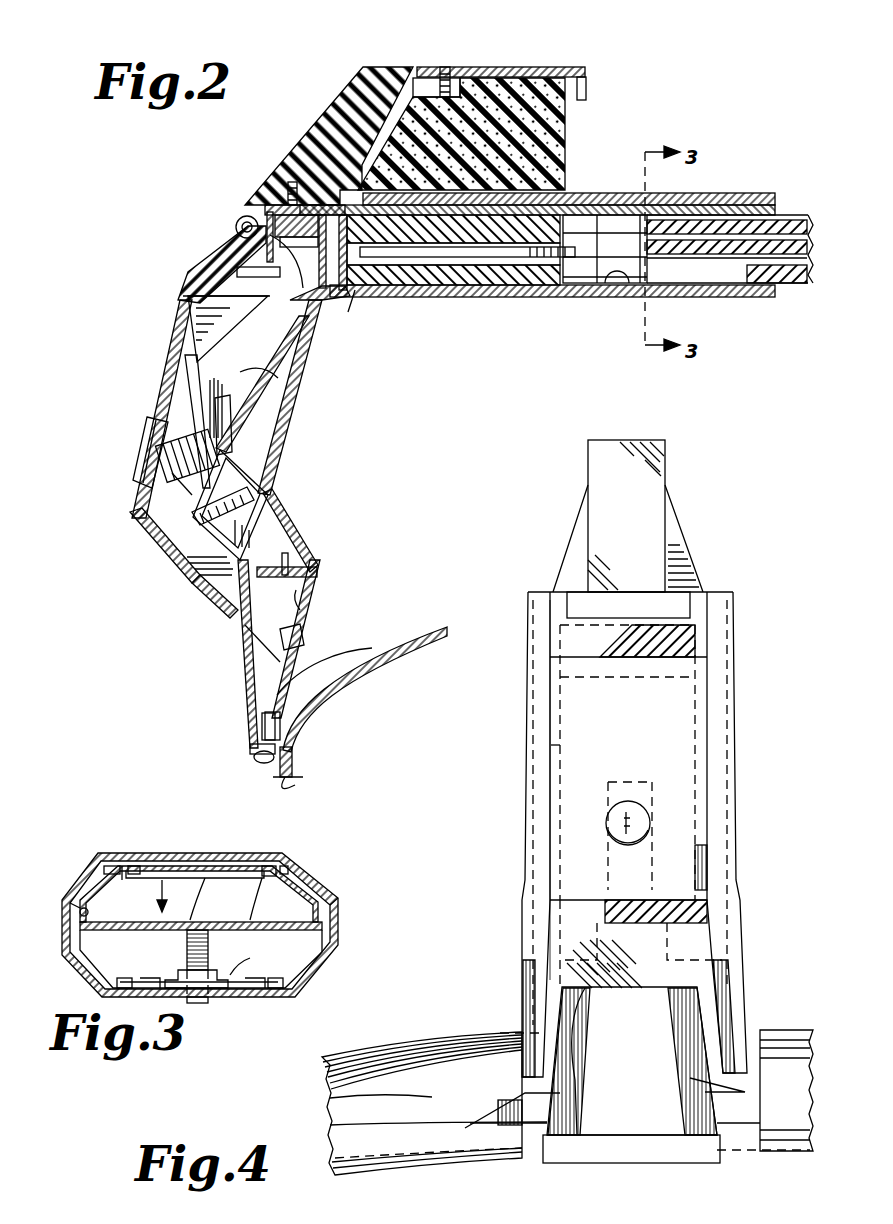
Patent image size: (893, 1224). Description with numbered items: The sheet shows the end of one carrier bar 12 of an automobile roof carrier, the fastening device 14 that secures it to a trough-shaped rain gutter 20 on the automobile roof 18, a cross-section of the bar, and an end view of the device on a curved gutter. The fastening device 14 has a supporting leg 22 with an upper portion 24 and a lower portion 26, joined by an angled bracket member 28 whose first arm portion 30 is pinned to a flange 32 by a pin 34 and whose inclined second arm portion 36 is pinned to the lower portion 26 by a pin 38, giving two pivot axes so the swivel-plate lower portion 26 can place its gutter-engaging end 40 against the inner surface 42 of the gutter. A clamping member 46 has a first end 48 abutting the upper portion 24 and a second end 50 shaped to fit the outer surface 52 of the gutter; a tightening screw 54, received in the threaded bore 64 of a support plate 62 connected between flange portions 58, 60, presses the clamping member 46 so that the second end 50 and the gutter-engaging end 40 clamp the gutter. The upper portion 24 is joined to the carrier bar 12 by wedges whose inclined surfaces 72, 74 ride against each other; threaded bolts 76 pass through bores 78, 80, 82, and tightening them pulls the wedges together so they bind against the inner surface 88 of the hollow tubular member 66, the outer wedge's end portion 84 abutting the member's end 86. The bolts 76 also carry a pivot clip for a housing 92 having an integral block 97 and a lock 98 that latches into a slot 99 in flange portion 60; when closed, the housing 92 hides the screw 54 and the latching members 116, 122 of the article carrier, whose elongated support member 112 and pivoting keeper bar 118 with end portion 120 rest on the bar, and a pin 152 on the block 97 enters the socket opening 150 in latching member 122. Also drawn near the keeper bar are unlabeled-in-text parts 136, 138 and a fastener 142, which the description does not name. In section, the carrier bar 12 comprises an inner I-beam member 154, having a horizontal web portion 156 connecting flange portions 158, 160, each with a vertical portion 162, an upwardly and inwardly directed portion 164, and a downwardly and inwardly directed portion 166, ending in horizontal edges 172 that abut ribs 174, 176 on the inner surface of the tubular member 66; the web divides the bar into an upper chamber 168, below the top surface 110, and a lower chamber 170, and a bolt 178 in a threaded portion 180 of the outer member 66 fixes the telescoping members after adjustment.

In FIG. 3, the carrier bar 12 is at (342, 864).
In FIG. 2, the fastening device 14 is at (118, 446).
In FIG. 4, the fastening device 14 is at (752, 700).
In FIG. 4, the automobile roof 18 is at (440, 1055).
In FIG. 2, the rain gutter 20 is at (245, 760).
In FIG. 4, the rain gutter 20 is at (418, 1142).
In FIG. 2, the supporting leg 22 is at (330, 505).
In FIG. 2, the upper portion 24 is at (292, 472).
In FIG. 2, the lower portion 26 is at (360, 652).
In FIG. 4, the lower portion 26 is at (765, 1100).
In FIG. 2, the angled bracket member 28 is at (322, 585).
In FIG. 2, the first arm portion 30 is at (240, 620).
In FIG. 2, the flange 32 is at (300, 540).
In FIG. 2, the pin 34 is at (312, 575).
In FIG. 2, the second arm portion 36 is at (309, 614).
In FIG. 2, the pin 38 is at (303, 640).
In FIG. 2, the rain gutter-engaging end 40 is at (296, 784).
In FIG. 2, the inner surface 42 is at (292, 730).
In FIG. 2, the clamping member 46 is at (176, 388).
In FIG. 4, the clamping member 46 is at (655, 1008).
In FIG. 2, the first end 48 is at (262, 312).
In FIG. 2, the second end 50 is at (250, 748).
In FIG. 4, the second end 50 is at (630, 1150).
In FIG. 2, the outer surface 52 is at (262, 728).
In FIG. 2, the tightening screw 54 is at (165, 532).
In FIG. 4, the flange portion 58 is at (695, 745).
In FIG. 2, the flange portion 60 is at (750, 298).
In FIG. 4, the flange portion 60 is at (550, 788).
In FIG. 2, the support plate 62 is at (195, 565).
In FIG. 2, the threaded bore 64 is at (180, 548).
In FIG. 3, the hollow tubular member 66 is at (338, 924).
In FIG. 2, the inclined surface 72 is at (520, 297).
In FIG. 2, the inclined surface 74 is at (480, 297).
In FIG. 2, the threaded bolts 76 is at (445, 297).
In FIG. 2, the bore 78 is at (338, 300).
In FIG. 2, the bore 80 is at (420, 297).
In FIG. 2, the bore 82 is at (575, 288).
In FIG. 2, the end portion 84 is at (350, 300).
In FIG. 2, the end 86 is at (362, 300).
In FIG. 2, the inner surface 88 is at (625, 285).
In FIG. 3, the inner surface 88 is at (163, 878).
In FIG. 2, the housing 92 is at (160, 355).
In FIG. 4, the housing 92 is at (526, 852).
In FIG. 2, the block 97 is at (200, 246).
In FIG. 2, the lock 98 is at (140, 460).
In FIG. 4, the lock 98 is at (650, 845).
In FIG. 2, the slot 99 is at (200, 405).
In FIG. 3, the top surface 110 is at (135, 868).
In FIG. 2, the elongated support member 112 is at (740, 193).
In FIG. 2, the latching member 116 is at (284, 196).
In FIG. 2, the keeper bar 118 is at (520, 66).
In FIG. 2, the end portion 120 is at (345, 128).
In FIG. 4, the end portion 120 is at (640, 522).
In FIG. 2, the latching member 122 is at (270, 222).
In FIG. 2, the upper cover 136 is at (590, 193).
In FIG. 2, the pad 138 is at (560, 118).
In FIG. 2, the screw 142 is at (447, 67).
In FIG. 2, the socket opening 150 is at (183, 298).
In FIG. 2, the pin 152 is at (236, 230).
In FIG. 2, the I-beam member 154 is at (770, 297).
In FIG. 3, the I-beam member 154 is at (205, 878).
In FIG. 3, the horizontal web portion 156 is at (262, 878).
In FIG. 3, the flange portion 158 is at (82, 905).
In FIG. 3, the flange portion 160 is at (340, 902).
In FIG. 3, the vertical portion 162 is at (340, 948).
In FIG. 3, the upwardly and inwardly directed portion 164 is at (110, 868).
In FIG. 3, the downwardly and inwardly directed portion 166 is at (312, 982).
In FIG. 3, the upper chamber 168 is at (122, 864).
In FIG. 3, the lower chamber 170 is at (240, 992).
In FIG. 3, the horizontal edges 172 is at (116, 882).
In FIG. 3, the rib 174 is at (160, 970).
In FIG. 3, the rib 176 is at (138, 880).
In FIG. 3, the bolt 178 is at (190, 972).
In FIG. 3, the threaded portion 180 is at (220, 992).